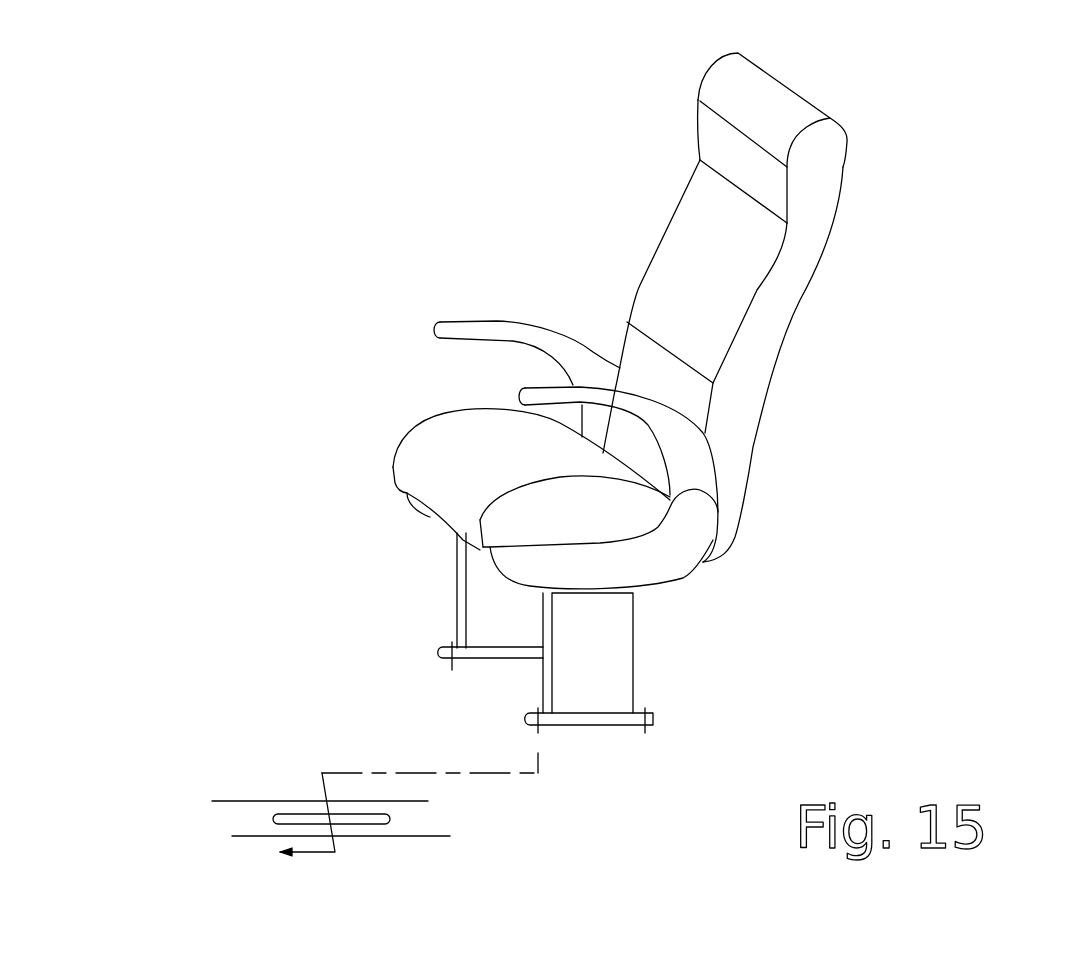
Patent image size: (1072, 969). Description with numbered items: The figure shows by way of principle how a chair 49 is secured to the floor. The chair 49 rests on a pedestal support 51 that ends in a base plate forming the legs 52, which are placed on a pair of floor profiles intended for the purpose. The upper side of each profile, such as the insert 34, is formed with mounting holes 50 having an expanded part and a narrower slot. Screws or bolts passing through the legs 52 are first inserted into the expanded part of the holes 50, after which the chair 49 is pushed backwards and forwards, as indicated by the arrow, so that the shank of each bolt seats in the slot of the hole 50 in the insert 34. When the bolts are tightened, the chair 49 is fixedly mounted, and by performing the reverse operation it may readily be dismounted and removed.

The chair 49 is at (620, 321).
The pedestal support 51 is at (620, 665).
The legs 52 is at (538, 733).
The mounting holes 50 is at (293, 817).
The insert 34 is at (230, 817).